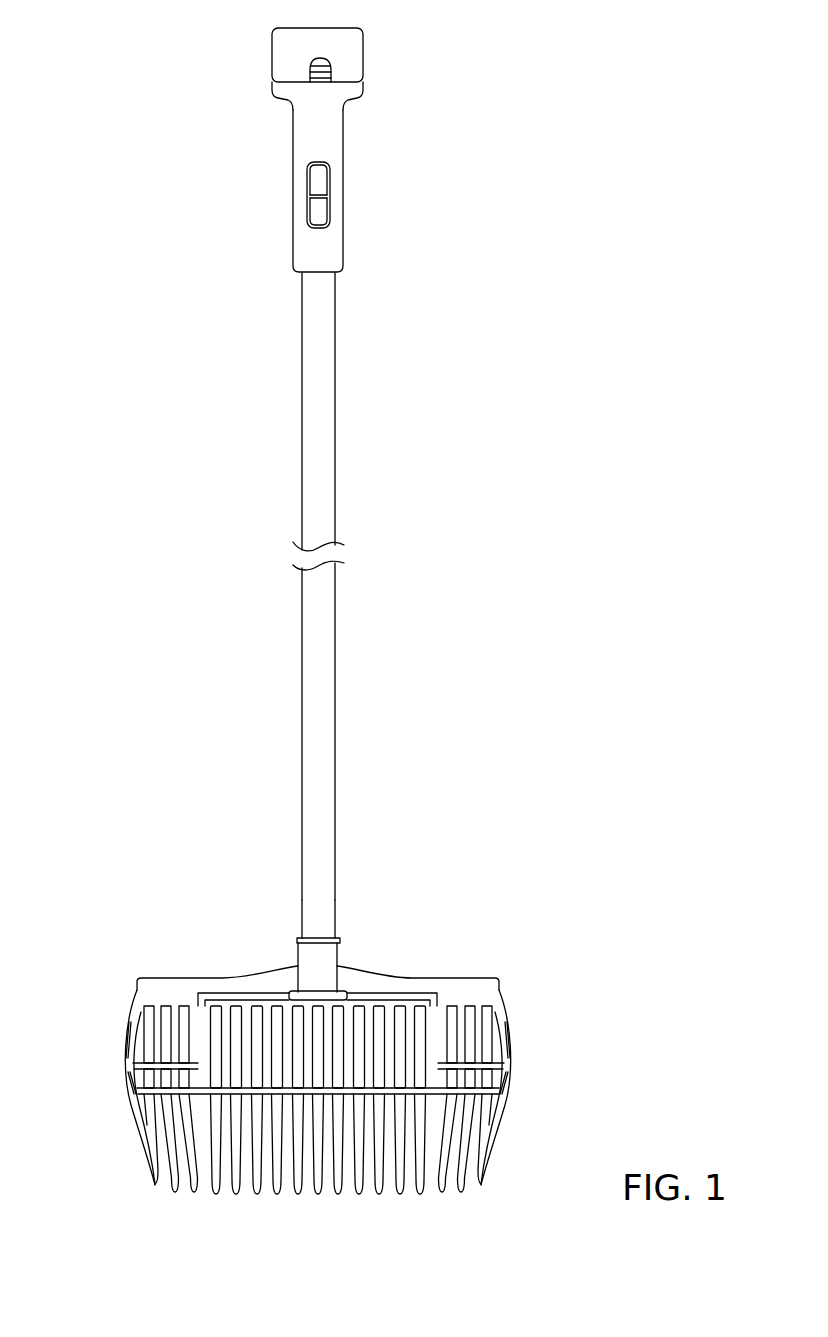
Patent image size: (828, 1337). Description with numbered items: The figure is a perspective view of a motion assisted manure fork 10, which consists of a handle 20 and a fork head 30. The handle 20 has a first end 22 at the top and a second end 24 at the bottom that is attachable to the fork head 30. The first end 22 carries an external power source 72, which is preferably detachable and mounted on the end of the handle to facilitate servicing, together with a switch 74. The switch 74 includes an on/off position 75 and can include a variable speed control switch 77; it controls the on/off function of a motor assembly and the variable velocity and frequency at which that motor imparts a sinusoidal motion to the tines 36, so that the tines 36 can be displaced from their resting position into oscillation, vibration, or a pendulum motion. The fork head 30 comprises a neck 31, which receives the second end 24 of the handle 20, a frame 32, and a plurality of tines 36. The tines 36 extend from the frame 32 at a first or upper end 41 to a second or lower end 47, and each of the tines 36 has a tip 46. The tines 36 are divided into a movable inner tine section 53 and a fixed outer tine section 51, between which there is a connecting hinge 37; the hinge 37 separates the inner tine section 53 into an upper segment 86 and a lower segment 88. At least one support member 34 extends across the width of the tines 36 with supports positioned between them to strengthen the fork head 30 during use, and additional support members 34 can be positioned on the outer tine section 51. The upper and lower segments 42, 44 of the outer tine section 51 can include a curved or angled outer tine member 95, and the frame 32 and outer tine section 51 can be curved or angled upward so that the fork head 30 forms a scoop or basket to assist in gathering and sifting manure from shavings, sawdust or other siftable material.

The motion assisted manure fork 10 is at (339, 636).
The handle 20 is at (358, 605).
The first end 22 is at (295, 144).
The second end 24 is at (354, 902).
The fork head 30 is at (339, 1082).
The neck 31 is at (337, 963).
The frame 32 is at (477, 975).
The support member 34 is at (467, 1062).
The tines 36 is at (318, 1131).
The connecting hinge 37 is at (206, 1092).
The upper end 41 is at (102, 1070).
The upper segment 42 is at (83, 1039).
The lower segment 44 is at (83, 1091).
The tip 46 is at (238, 1194).
The lower end 47 is at (176, 1194).
The outer tine section 51 is at (283, 1057).
The inner tine section 53 is at (284, 965).
The external power source 72 is at (360, 48).
The switch 74 is at (231, 193).
The on/off position 75 is at (317, 177).
The variable speed control switch 77 is at (317, 210).
The upper segment 86 is at (318, 1018).
The lower segment 88 is at (308, 1119).
The outer tine member 95 is at (506, 1087).